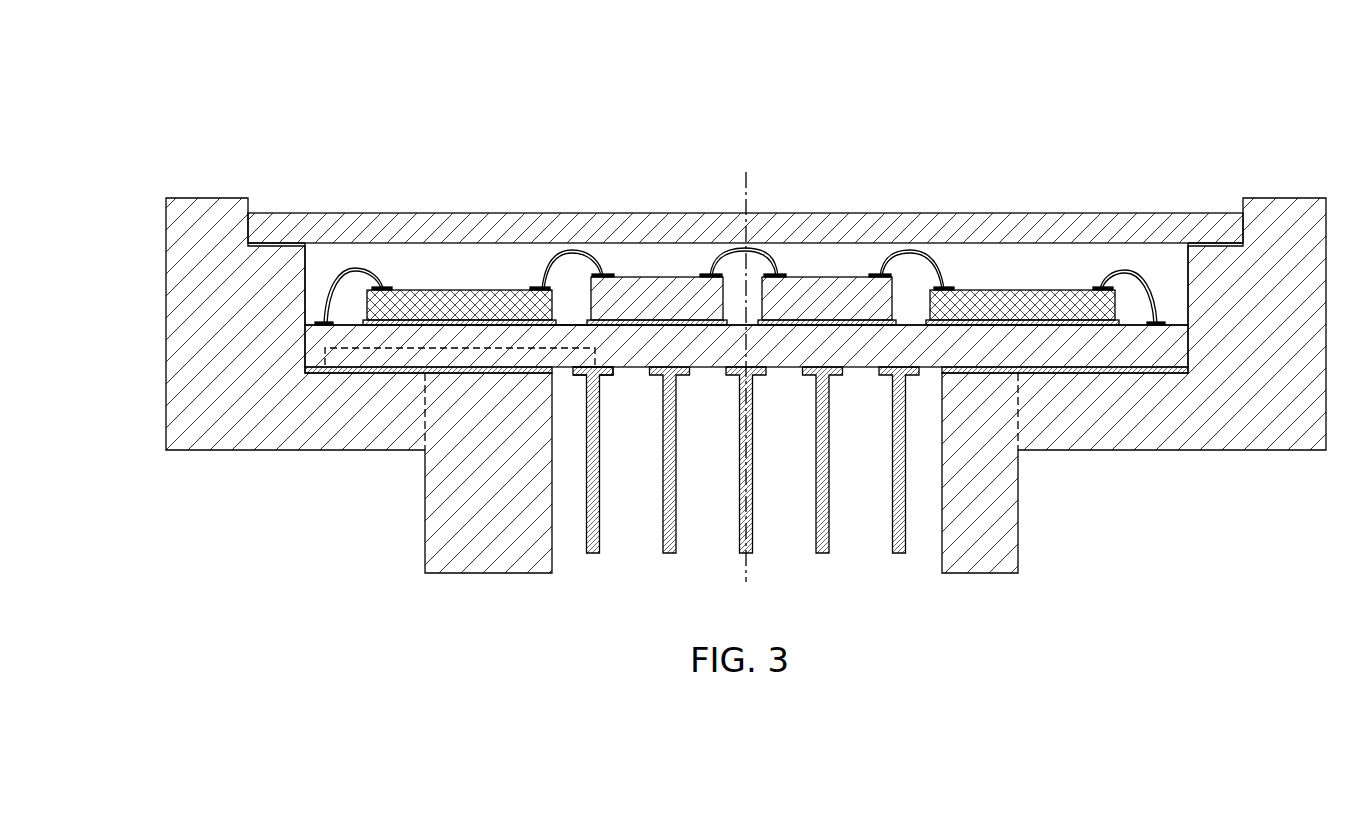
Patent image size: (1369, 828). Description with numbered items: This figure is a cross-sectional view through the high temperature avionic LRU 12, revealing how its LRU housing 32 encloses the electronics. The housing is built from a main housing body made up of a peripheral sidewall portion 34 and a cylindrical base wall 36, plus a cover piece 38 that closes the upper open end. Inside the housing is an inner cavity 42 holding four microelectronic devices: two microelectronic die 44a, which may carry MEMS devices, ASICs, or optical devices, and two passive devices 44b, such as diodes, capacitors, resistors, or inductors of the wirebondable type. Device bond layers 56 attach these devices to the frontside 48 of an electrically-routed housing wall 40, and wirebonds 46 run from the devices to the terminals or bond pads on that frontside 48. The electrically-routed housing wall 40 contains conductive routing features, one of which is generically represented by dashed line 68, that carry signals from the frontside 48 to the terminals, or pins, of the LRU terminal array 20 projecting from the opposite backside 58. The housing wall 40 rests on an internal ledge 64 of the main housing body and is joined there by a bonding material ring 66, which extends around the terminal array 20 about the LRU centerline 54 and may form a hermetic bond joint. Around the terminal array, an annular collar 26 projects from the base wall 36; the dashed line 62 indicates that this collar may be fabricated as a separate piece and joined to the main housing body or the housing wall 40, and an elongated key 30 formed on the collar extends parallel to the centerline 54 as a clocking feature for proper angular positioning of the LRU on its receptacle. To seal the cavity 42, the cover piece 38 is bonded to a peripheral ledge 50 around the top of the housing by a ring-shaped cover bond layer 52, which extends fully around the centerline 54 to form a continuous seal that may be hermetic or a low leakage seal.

The avionic LRU 12 is at (707, 367).
The LRU terminal array 20 is at (730, 503).
The annular collar 26 is at (1018, 518).
The elongated key 30 is at (425, 540).
The LRU housing 32 is at (707, 353).
The peripheral sidewall portion 34 is at (167, 273).
The cylindrical base wall 36 is at (1218, 452).
The cover piece 38 is at (1098, 213).
The electrically-routed housing wall 40 is at (700, 339).
The inner cavity 42 is at (1177, 277).
The microelectronic die 44a is at (455, 292).
The passive devices 44b is at (640, 285).
The wirebonds 46 is at (350, 272).
The frontside 48 is at (566, 325).
The peripheral ledge 50 is at (298, 278).
The cover bond layer 52 is at (252, 247).
The centerline 54 is at (751, 190).
The device bond layers 56 is at (398, 323).
The backside 58 is at (634, 375).
The dashed line 62 is at (430, 402).
The internal ledge 64 is at (312, 375).
The bonding material ring 66 is at (366, 375).
The interconnect feature 68 is at (600, 354).